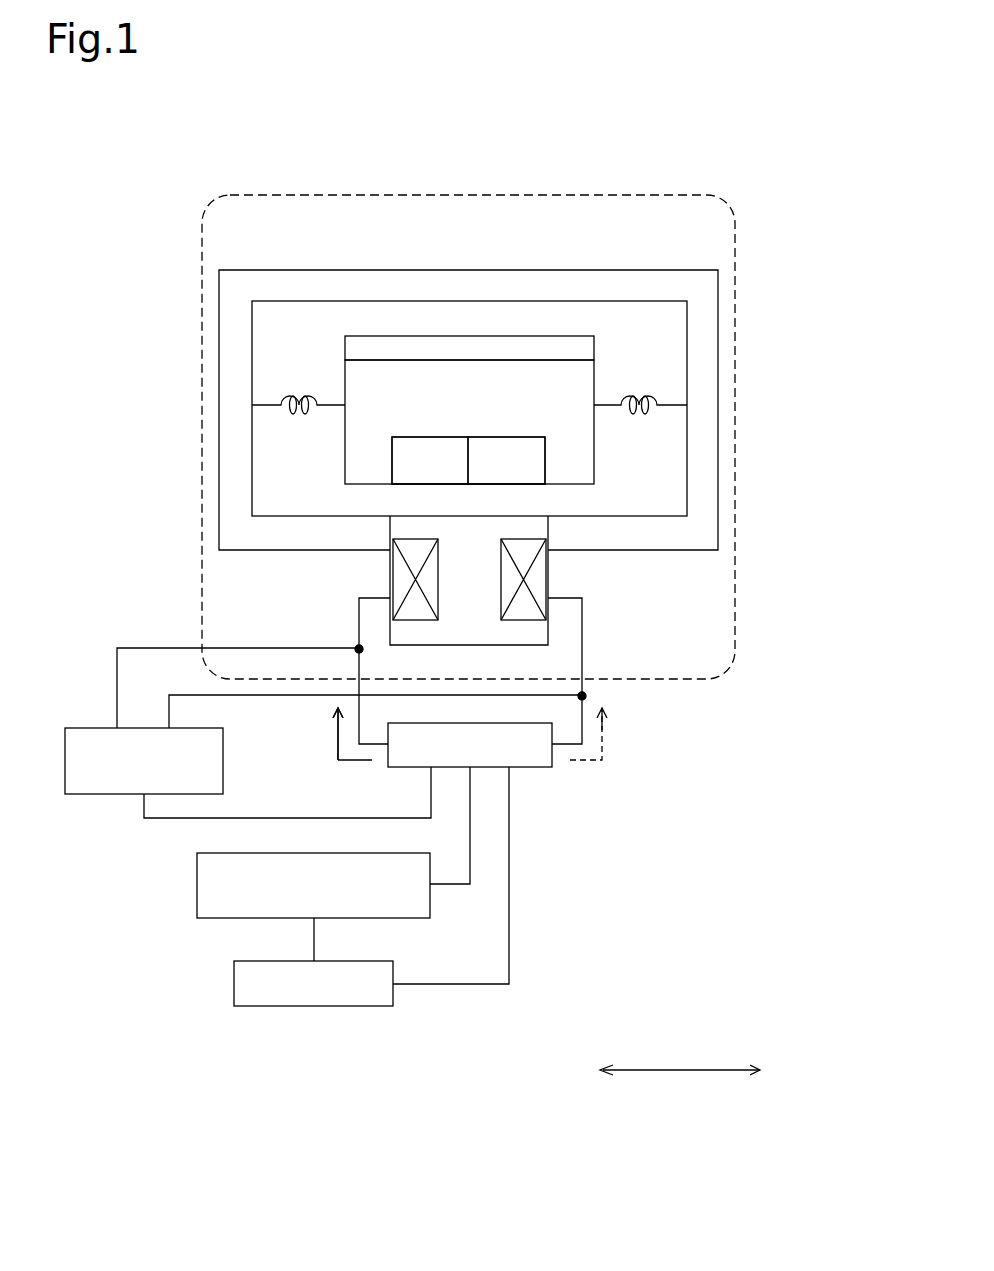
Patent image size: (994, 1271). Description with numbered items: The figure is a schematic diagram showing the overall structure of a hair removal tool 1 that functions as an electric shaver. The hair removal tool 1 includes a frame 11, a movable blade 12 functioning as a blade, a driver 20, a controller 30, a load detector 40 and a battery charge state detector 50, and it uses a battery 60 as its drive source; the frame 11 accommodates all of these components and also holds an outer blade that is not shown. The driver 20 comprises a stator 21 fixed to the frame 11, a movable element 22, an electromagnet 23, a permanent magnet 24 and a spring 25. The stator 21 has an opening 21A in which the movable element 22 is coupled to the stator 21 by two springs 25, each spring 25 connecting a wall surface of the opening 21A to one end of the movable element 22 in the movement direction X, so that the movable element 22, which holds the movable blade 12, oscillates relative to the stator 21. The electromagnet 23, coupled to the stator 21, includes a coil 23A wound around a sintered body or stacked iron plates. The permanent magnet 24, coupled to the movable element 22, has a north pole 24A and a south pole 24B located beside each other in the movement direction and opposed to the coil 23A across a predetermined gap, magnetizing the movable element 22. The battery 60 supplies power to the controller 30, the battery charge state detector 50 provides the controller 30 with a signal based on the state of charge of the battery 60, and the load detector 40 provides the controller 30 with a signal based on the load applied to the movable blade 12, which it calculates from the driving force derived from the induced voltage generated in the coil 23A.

The hair removal tool 1 is at (806, 202).
The frame 11 is at (735, 238).
The movable blade 12 is at (392, 348).
The driver 20 is at (622, 256).
The stator 21 is at (270, 268).
The opening 21A is at (485, 301).
The movable element 22 is at (594, 462).
The electromagnet 23 is at (466, 645).
The coil 23A is at (392, 573).
The permanent magnet 24 is at (527, 401).
The north pole 24A is at (501, 437).
The south pole 24B is at (432, 437).
The spring 25 is at (300, 390).
The controller 30 is at (529, 767).
The load detector 40 is at (83, 794).
The battery charge state detector 50 is at (196, 881).
The battery 60 is at (233, 984).